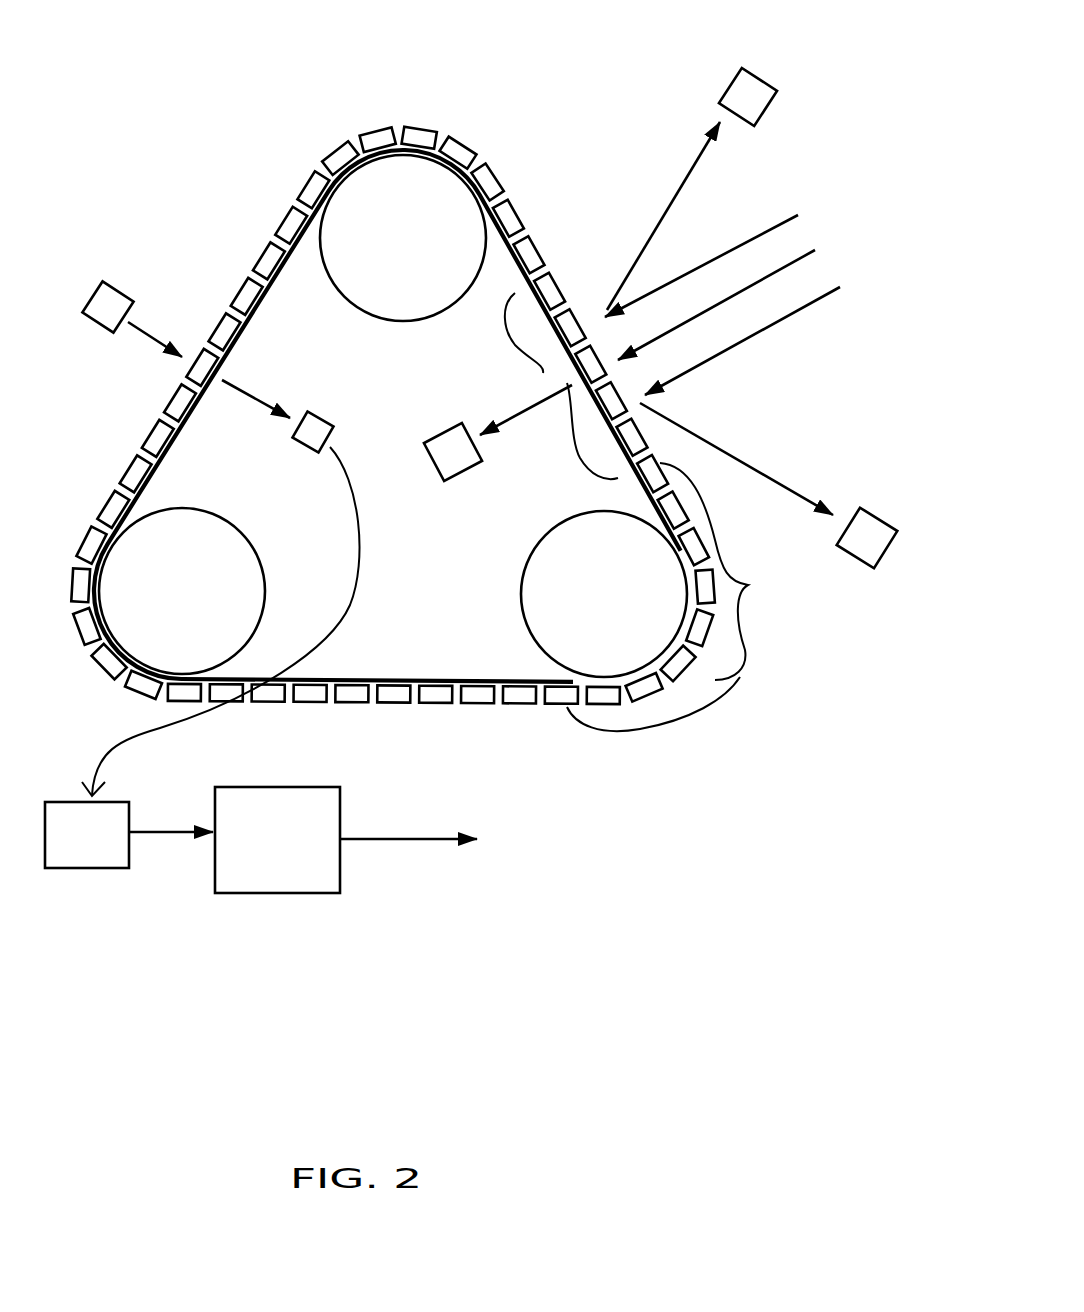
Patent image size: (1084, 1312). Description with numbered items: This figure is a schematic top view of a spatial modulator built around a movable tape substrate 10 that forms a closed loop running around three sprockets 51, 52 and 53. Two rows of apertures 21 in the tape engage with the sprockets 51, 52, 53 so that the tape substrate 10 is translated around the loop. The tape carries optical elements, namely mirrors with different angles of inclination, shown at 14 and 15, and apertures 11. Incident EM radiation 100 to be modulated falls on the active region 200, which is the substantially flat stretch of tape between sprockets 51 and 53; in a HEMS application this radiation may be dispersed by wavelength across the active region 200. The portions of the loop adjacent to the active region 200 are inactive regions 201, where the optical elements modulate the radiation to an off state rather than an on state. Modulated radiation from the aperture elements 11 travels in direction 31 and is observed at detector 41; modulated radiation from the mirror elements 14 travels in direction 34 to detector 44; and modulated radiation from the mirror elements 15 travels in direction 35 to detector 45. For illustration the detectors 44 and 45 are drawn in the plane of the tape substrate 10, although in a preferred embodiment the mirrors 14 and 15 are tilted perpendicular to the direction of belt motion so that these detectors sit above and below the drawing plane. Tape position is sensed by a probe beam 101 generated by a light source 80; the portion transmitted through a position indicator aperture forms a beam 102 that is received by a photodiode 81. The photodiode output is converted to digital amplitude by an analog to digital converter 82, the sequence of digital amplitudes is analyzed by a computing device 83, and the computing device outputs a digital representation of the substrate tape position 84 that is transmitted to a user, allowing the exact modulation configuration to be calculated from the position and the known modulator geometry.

The tape substrate 10 is at (740, 677).
The aperture 11 is at (602, 371).
The mirror 14 is at (640, 403).
The mirror 15 is at (571, 352).
The apertures 21 is at (404, 148).
The direction 31 is at (526, 426).
The direction 34 is at (786, 488).
The direction 35 is at (700, 155).
The detector 41 is at (456, 462).
The detector 44 is at (872, 540).
The detector 45 is at (746, 98).
The sprocket 51 is at (403, 238).
The sprocket 52 is at (182, 591).
The sprocket 53 is at (604, 594).
The light source 80 is at (110, 300).
The photodiode 81 is at (313, 428).
The analog to digital converter 82 is at (67, 843).
The computing device 83 is at (283, 865).
The substrate tape position 84 is at (435, 841).
The incident EM radiation 100 is at (781, 235).
The probe beam 101 is at (167, 318).
The beam 102 is at (276, 390).
The active region 200 is at (543, 373).
The inactive region 201 is at (741, 571).